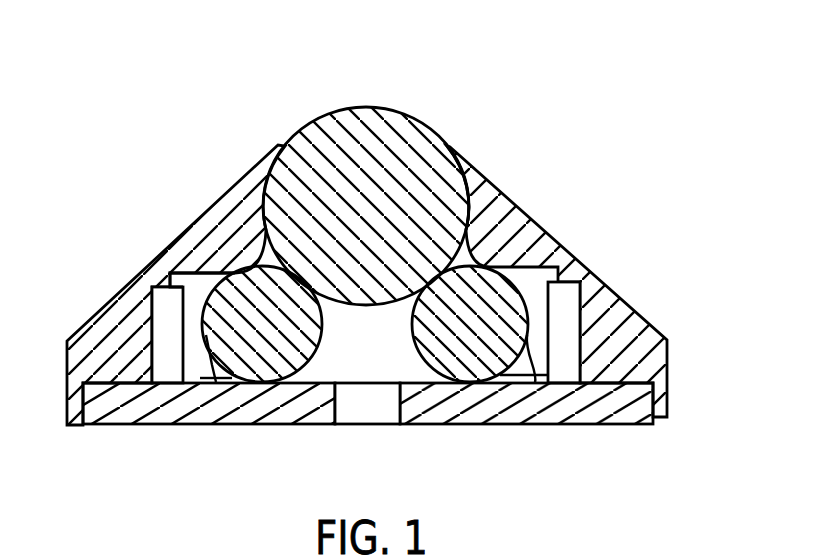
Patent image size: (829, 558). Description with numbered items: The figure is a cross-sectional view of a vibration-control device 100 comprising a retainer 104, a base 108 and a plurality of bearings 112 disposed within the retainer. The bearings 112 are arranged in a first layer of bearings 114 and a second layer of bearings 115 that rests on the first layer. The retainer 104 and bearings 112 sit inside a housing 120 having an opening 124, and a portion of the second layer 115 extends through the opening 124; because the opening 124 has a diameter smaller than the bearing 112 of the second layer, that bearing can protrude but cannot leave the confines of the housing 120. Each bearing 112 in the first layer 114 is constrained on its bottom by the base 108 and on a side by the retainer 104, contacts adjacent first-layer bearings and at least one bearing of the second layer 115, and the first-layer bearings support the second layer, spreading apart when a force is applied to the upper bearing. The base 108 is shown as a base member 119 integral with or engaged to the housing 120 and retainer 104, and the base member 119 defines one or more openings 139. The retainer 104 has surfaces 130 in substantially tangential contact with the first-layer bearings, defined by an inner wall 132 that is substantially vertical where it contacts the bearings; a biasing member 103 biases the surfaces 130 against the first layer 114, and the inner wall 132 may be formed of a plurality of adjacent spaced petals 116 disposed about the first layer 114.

The device 100 is at (367, 270).
The biasing member 103 is at (155, 322).
The retainer 104 is at (173, 293).
The base 108 is at (378, 461).
The bearings 112 is at (309, 143).
The first layer of bearings 114 is at (532, 322).
The second layer of bearings 115 is at (470, 205).
The petals 116 is at (535, 383).
The base member 119 is at (472, 412).
The housing 120 is at (592, 295).
The opening 124 is at (374, 216).
The surfaces 130 is at (216, 382).
The inner wall 132 is at (192, 380).
The openings 139 is at (383, 413).